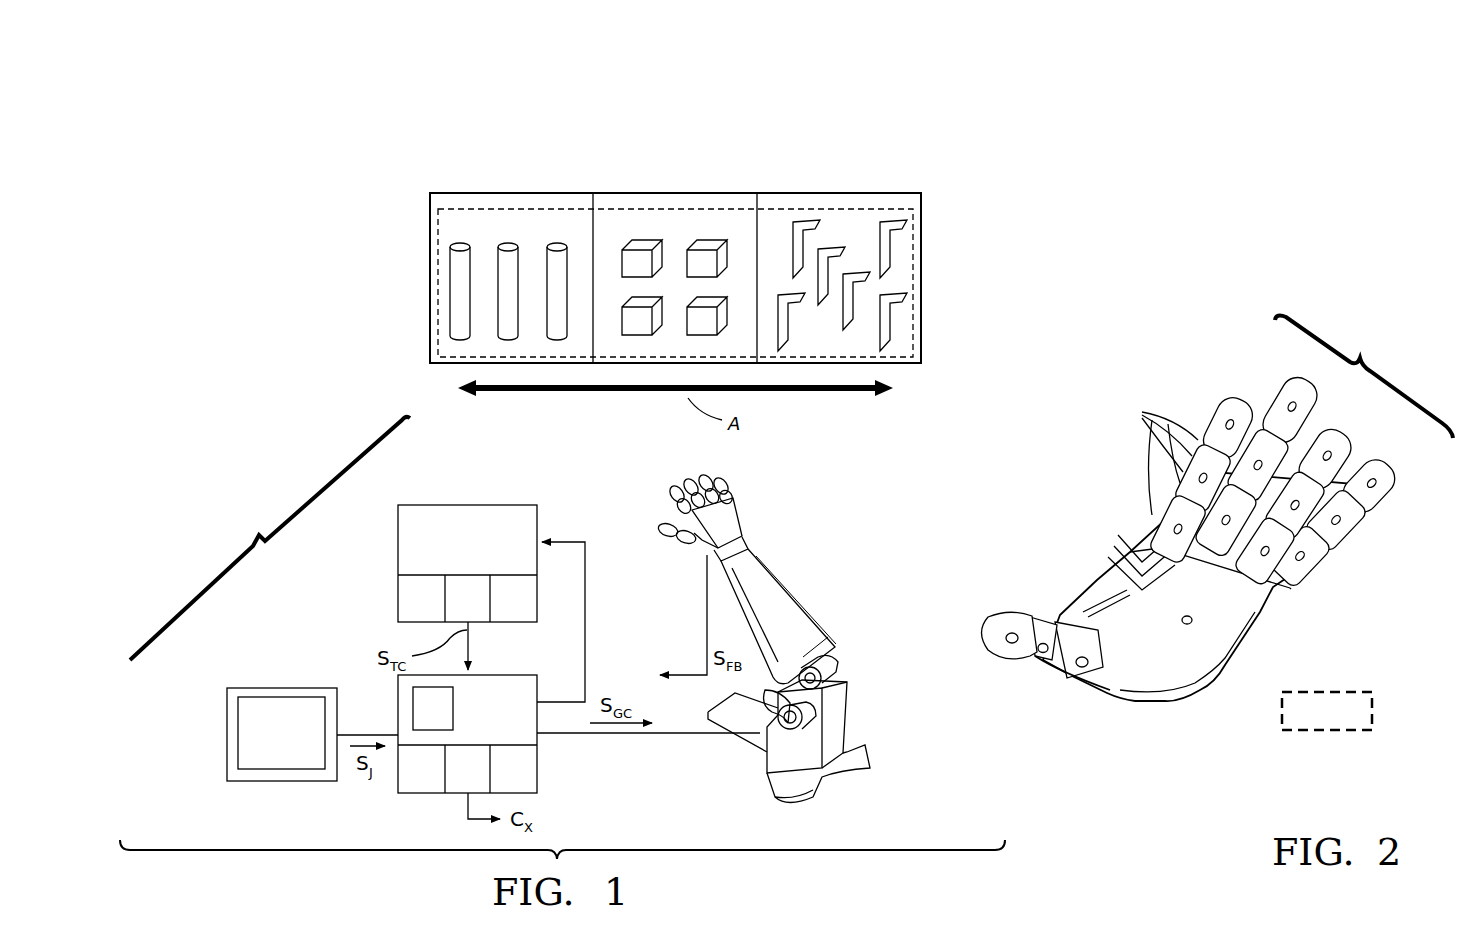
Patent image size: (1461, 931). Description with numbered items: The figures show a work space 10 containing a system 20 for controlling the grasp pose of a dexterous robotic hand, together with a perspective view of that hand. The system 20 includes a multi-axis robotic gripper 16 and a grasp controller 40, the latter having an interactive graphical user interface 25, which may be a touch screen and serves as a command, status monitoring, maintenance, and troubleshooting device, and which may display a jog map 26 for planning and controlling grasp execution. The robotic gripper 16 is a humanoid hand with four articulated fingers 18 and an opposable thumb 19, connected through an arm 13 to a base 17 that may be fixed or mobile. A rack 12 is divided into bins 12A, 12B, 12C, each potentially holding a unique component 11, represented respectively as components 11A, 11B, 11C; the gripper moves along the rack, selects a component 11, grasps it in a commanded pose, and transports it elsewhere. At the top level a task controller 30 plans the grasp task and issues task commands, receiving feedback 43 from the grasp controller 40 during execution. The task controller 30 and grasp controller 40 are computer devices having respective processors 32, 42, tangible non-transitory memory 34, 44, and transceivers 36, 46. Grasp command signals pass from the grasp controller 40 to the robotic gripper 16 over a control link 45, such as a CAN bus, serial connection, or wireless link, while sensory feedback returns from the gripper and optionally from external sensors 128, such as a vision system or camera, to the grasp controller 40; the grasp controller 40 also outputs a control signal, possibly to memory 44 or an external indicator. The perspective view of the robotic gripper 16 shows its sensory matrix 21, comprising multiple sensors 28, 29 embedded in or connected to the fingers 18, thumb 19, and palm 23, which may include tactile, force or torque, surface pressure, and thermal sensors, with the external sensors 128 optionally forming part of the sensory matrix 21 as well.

In FIG. 1, the work space 10 is at (405, 112).
In FIG. 1, the component 11 is at (926, 333).
In FIG. 1, the rack 12 is at (956, 268).
In FIG. 1, the component 11A is at (450, 296).
In FIG. 1, the bin 12A is at (462, 219).
In FIG. 1, the component 11B is at (645, 243).
In FIG. 1, the bin 12B is at (690, 212).
In FIG. 1, the component 11C is at (905, 224).
In FIG. 1, the bin 12C is at (848, 212).
In FIG. 1, the arm 13 is at (788, 615).
In FIG. 1, the multi-axis robotic gripper 16 is at (775, 497).
In FIG. 2, the multi-axis robotic gripper 16 is at (1218, 561).
In FIG. 1, the base 17 is at (873, 758).
In FIG. 1, the fingers 18 is at (737, 480).
In FIG. 2, the fingers 18 is at (1303, 380).
In FIG. 1, the thumb 19 is at (692, 551).
In FIG. 2, the thumb 19 is at (1005, 612).
In FIG. 1, the system 20 is at (270, 538).
In FIG. 2, the sensory matrix 21 is at (1385, 528).
In FIG. 2, the palm 23 is at (1143, 677).
In FIG. 1, the graphical user interface 25 is at (227, 745).
In FIG. 1, the jog map 26 is at (237, 720).
In FIG. 2, the sensor 28 is at (1158, 461).
In FIG. 2, the sensor 29 is at (1192, 623).
In FIG. 1, the task controller 30 is at (398, 540).
In FIG. 1, the processor 32 is at (432, 610).
In FIG. 1, the memory 34 is at (477, 610).
In FIG. 1, the transceiver 36 is at (522, 610).
In FIG. 1, the grasp controller 40 is at (398, 697).
In FIG. 1, the processor 42 is at (432, 783).
In FIG. 1, the memory 44 is at (477, 783).
In FIG. 1, the transceiver 46 is at (522, 783).
In FIG. 1, the feedback 43 is at (585, 652).
In FIG. 1, the control link 45 is at (637, 735).
In FIG. 2, the external sensors 128 is at (1328, 730).